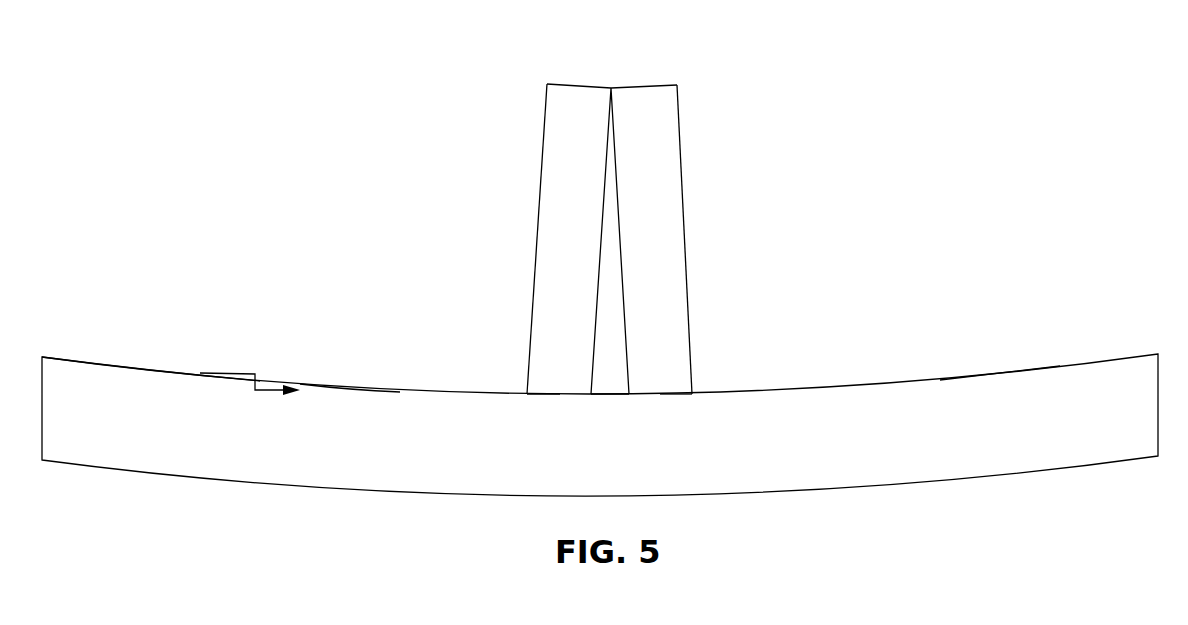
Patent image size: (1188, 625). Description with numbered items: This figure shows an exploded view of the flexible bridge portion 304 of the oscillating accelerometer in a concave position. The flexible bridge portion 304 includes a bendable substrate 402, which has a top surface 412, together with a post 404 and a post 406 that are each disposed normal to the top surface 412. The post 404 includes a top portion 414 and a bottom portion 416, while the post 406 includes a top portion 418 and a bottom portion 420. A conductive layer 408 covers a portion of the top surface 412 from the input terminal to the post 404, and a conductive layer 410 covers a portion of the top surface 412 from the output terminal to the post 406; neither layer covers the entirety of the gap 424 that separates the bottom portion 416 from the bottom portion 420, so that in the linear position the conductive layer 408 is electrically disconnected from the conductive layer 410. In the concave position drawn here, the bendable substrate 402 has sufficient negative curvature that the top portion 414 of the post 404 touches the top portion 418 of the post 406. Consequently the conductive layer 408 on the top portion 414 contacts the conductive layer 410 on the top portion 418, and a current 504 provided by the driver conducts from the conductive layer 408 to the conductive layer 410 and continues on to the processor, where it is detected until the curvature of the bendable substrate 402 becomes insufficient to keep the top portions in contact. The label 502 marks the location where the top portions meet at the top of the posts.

The flexible bridge portion 304 is at (181, 116).
The bendable substrate 402 is at (152, 444).
The post 404 is at (539, 196).
The post 406 is at (683, 258).
The conductive layer 408 is at (125, 366).
The conductive layer 410 is at (993, 374).
The top surface 412 is at (350, 388).
The top portion 414 is at (545, 118).
The bottom portion 416 is at (550, 383).
The top portion 418 is at (678, 104).
The bottom portion 420 is at (673, 382).
The gap 424 is at (604, 397).
The apex notch 502 is at (611, 88).
The current 504 is at (255, 374).